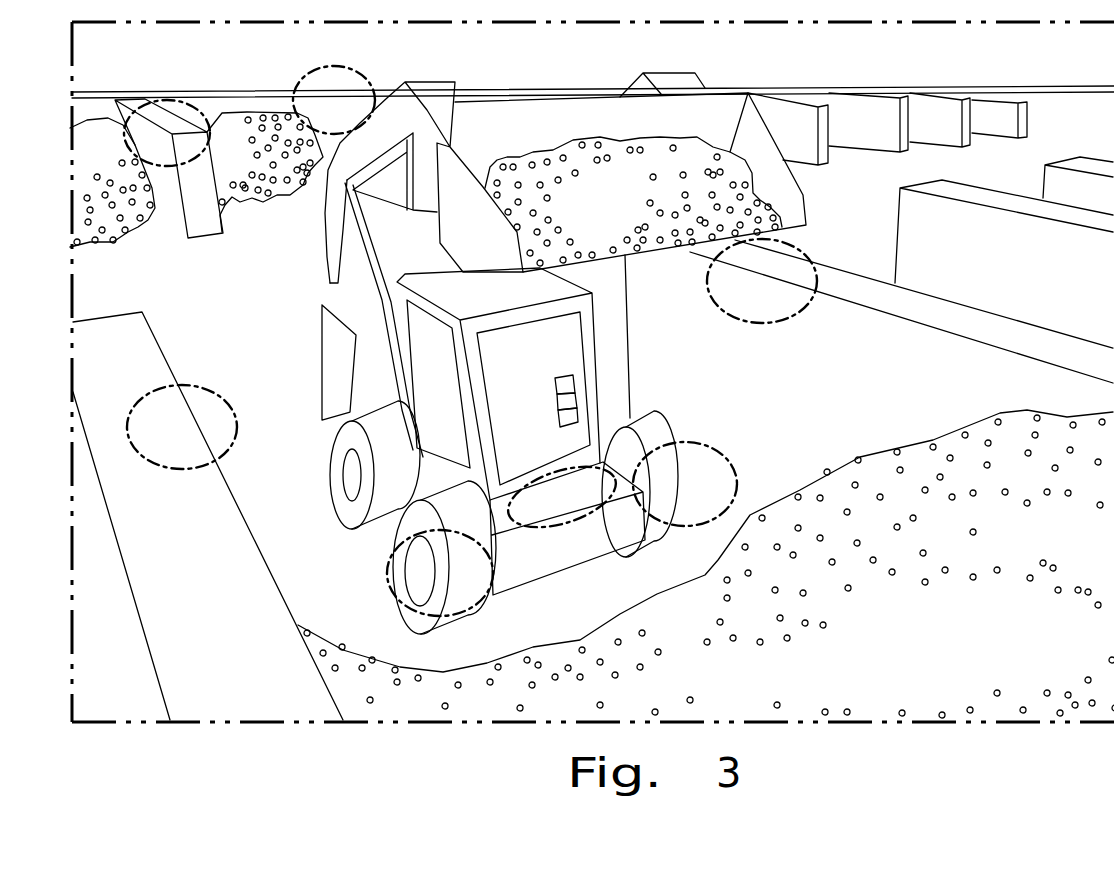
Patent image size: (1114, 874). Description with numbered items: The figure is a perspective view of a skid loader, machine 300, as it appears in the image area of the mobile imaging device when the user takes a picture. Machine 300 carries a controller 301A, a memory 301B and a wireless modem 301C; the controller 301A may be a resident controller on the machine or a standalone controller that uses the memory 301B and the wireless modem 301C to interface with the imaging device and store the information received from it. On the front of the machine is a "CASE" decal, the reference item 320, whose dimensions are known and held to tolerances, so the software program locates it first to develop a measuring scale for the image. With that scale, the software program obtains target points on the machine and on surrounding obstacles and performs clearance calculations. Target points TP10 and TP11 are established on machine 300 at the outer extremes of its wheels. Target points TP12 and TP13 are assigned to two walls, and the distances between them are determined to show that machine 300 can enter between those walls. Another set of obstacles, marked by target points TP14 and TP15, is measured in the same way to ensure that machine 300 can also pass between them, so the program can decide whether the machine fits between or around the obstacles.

The machine 300 is at (326, 293).
The controller 301A is at (576, 384).
The memory 301B is at (577, 401).
The wireless modem 301C is at (578, 416).
The reference item 320 is at (575, 521).
The target point TP10 is at (388, 572).
The target point TP11 is at (727, 448).
The target point TP12 is at (206, 386).
The target point TP13 is at (800, 313).
The target point TP14 is at (164, 99).
The target point TP15 is at (355, 70).